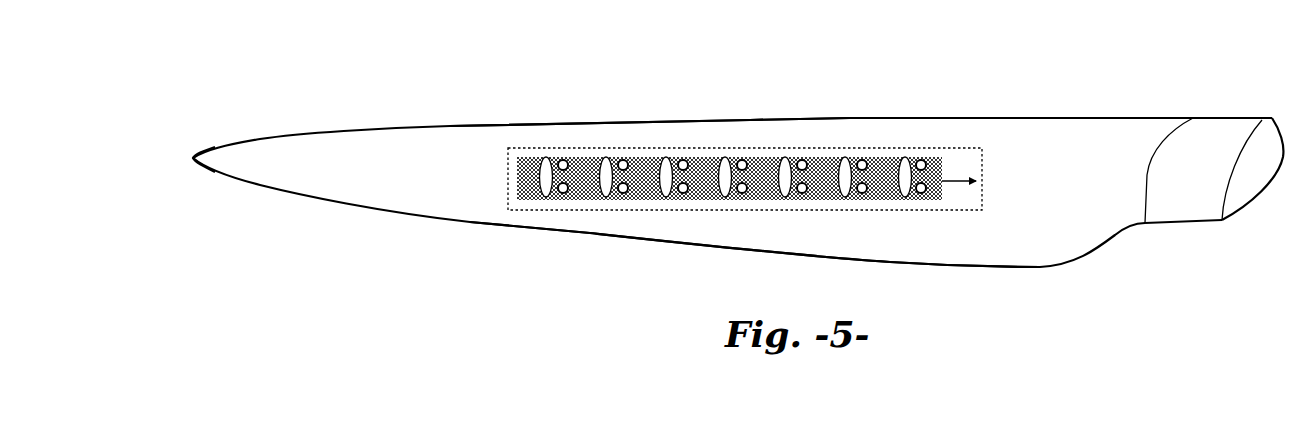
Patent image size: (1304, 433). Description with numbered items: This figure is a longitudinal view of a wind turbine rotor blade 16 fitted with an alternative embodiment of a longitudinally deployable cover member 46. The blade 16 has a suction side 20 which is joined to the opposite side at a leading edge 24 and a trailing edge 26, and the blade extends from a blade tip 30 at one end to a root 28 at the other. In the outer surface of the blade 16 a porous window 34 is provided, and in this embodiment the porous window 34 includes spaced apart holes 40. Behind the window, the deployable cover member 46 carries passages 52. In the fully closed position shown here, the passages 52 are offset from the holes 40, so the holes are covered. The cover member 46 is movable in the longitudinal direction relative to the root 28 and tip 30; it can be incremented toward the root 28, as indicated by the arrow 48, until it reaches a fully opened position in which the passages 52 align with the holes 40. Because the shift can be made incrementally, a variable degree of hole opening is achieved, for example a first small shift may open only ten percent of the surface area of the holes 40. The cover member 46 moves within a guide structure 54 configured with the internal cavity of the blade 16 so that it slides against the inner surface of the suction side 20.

The wind turbine rotor blade 16 is at (1072, 82).
The suction side 20 is at (1105, 200).
The leading edge 24 is at (475, 125).
The trailing edge 26 is at (890, 262).
The root 28 is at (1210, 142).
The blade tip 30 is at (192, 157).
The porous window 34 is at (698, 162).
The holes 40 is at (867, 170).
The deployable cover member 46 is at (762, 190).
The arrow 48 is at (952, 181).
The passages 52 is at (552, 192).
The guide structure 54 is at (935, 208).